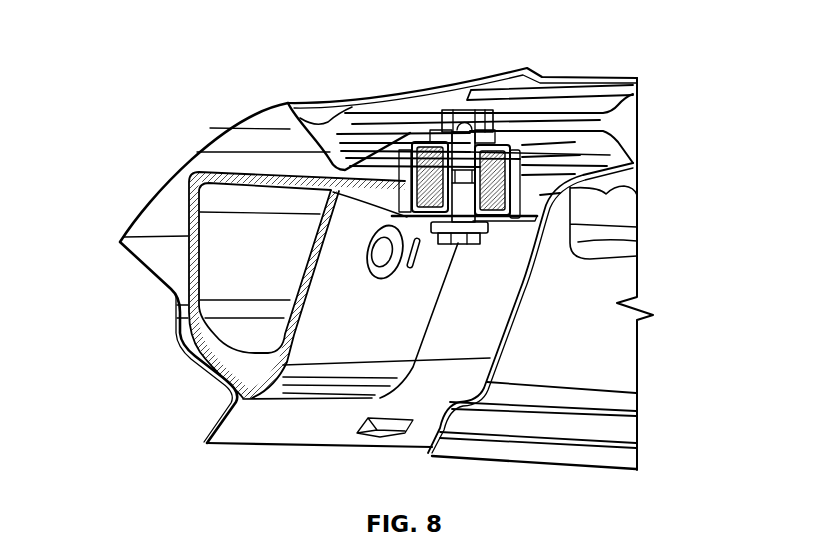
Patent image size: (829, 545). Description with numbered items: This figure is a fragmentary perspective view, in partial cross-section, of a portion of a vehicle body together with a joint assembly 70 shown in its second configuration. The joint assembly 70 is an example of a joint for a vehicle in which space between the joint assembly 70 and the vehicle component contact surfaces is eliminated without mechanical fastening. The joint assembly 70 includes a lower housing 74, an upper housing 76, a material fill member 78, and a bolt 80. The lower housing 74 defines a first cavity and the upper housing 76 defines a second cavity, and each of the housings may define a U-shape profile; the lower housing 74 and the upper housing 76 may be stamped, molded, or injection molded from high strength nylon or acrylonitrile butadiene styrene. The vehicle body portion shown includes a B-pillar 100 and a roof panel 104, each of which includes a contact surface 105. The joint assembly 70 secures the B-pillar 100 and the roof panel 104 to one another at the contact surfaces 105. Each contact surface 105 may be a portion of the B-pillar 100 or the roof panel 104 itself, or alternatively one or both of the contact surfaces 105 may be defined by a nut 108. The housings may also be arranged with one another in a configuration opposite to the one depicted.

The roof panel 104 is at (362, 113).
The contact surface 105 is at (428, 134).
The nut 108 is at (447, 118).
The upper housing 76 is at (495, 147).
The lower housing 74 is at (432, 215).
The joint assembly 70 is at (443, 270).
The material fill member 78 is at (462, 215).
The bolt 80 is at (513, 220).
The B-pillar 100 is at (430, 330).